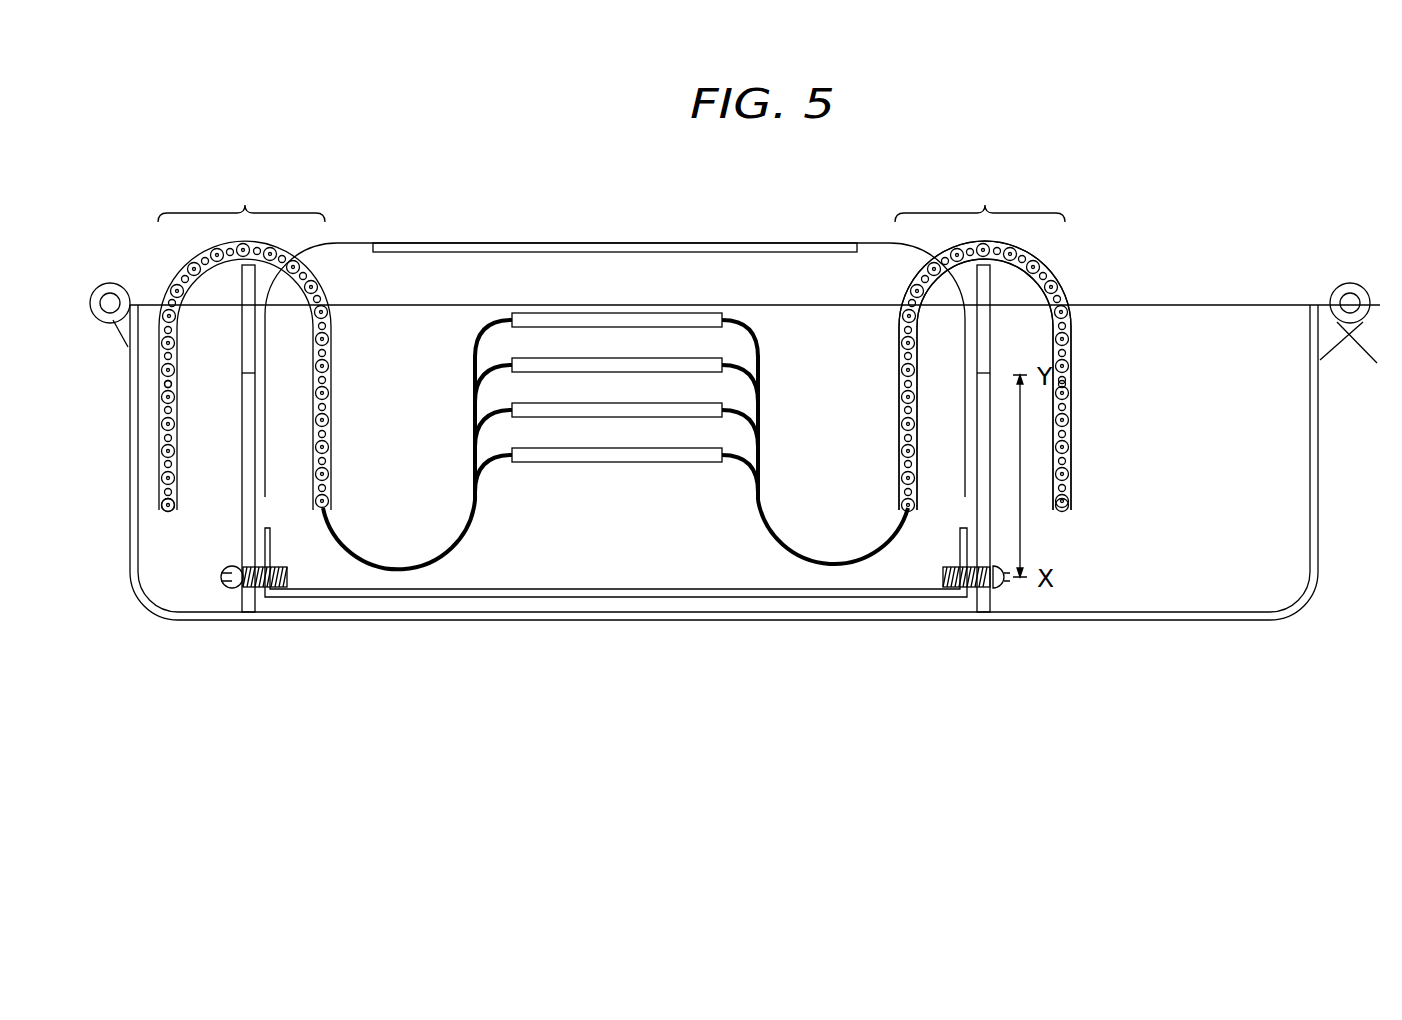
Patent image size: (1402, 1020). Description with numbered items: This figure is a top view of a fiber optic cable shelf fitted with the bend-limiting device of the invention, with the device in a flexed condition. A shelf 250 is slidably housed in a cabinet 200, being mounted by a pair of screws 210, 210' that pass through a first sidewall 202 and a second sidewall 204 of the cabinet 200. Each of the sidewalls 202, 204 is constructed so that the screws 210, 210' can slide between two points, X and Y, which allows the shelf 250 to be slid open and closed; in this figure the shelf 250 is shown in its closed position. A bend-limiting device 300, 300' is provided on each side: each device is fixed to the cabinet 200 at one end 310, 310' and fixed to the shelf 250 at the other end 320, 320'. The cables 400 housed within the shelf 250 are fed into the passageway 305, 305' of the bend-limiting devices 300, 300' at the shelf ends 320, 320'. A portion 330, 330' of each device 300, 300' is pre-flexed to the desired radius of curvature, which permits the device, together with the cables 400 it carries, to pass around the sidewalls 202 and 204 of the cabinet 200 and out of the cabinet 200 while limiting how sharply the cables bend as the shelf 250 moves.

The cabinet 200 is at (1318, 508).
The first sidewall 202 is at (263, 493).
The second sidewall 204 is at (967, 497).
The screw 210 is at (221, 617).
The screw 210' is at (1024, 621).
The shelf 250 is at (622, 243).
The bend-limiting device 300 is at (218, 373).
The bend-limiting device 300' is at (1022, 373).
The passageway 305 is at (116, 376).
The passageway 305' is at (1105, 371).
The end 310 is at (122, 494).
The end 310' is at (1104, 529).
The end 320 is at (399, 462).
The end 320' is at (833, 459).
The pre-flexed portion 330 is at (241, 194).
The pre-flexed portion 330' is at (980, 194).
The cables 400 is at (506, 318).